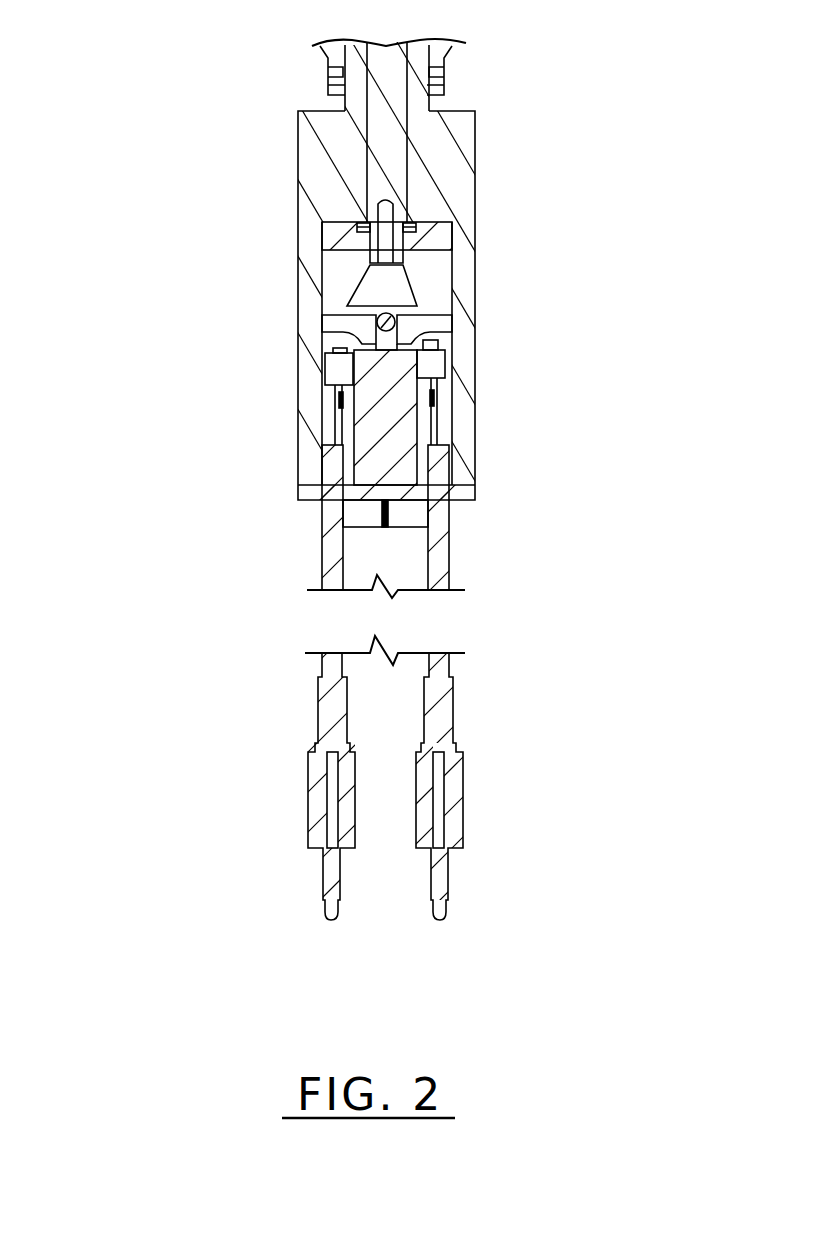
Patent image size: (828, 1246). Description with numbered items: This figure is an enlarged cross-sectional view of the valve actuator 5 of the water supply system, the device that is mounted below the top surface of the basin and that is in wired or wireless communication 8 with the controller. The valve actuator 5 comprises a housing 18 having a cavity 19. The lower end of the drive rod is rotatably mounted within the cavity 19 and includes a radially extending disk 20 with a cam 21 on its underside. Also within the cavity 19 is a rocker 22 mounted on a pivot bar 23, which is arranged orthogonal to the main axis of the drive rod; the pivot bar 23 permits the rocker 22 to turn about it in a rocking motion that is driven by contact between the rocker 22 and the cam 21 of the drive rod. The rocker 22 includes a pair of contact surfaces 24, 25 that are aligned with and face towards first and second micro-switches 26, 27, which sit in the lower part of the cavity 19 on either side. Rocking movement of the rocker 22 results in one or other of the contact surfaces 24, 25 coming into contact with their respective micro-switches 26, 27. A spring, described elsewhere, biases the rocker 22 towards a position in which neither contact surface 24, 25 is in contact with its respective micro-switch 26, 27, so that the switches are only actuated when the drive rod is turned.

The valve actuator 5 is at (574, 107).
The wired or wireless communication 8 is at (458, 736).
The housing 18 is at (472, 245).
The cavity 19 is at (330, 275).
The radially extending disk 20 is at (440, 243).
The cam 21 is at (350, 258).
The rocker 22 is at (427, 300).
The pivot bar 23 is at (378, 320).
The contact surface 24 is at (330, 336).
The contact surface 25 is at (437, 333).
The first micro-switch 26 is at (328, 370).
The second micro-switch 27 is at (445, 355).